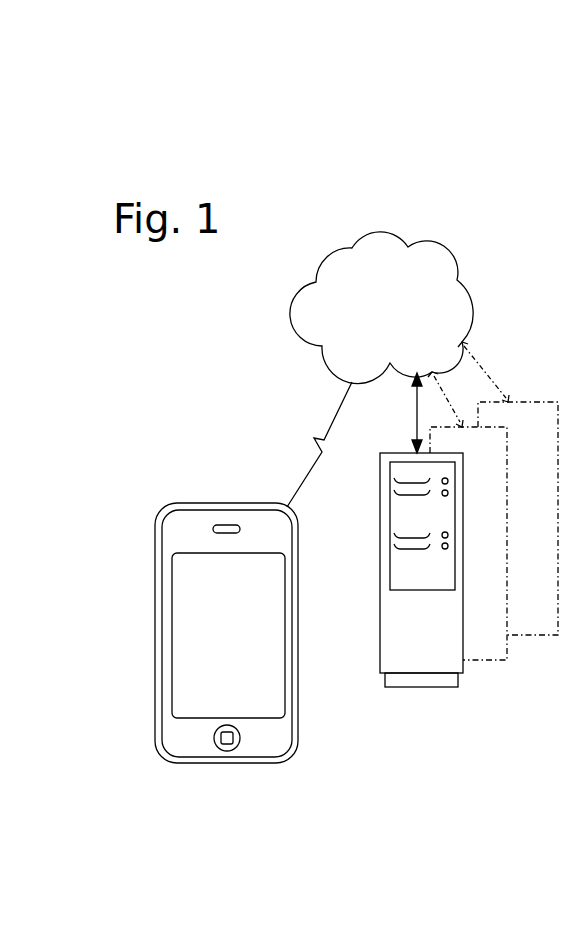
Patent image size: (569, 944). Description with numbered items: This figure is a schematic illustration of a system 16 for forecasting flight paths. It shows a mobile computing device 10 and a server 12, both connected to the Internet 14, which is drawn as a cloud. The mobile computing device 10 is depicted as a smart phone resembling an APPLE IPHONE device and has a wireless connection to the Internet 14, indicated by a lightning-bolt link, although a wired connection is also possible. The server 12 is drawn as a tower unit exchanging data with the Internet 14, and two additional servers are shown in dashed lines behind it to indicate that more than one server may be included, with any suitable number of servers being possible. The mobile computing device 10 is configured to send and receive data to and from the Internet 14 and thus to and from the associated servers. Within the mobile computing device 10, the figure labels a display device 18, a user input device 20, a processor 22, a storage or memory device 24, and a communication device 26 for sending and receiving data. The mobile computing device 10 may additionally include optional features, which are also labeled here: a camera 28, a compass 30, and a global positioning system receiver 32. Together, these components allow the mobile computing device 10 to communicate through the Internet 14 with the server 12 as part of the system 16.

The mobile computing device 10 is at (230, 608).
The server 12 is at (545, 635).
The Internet 14 is at (378, 232).
The system 16 is at (488, 247).
The display device 18 is at (240, 612).
The user input device 20 is at (285, 672).
The processor 22 is at (193, 690).
The storage device 24 is at (193, 635).
The communication device 26 is at (265, 592).
The camera 28 is at (265, 640).
The compass 30 is at (265, 695).
The global positioning system receiver 32 is at (277, 538).